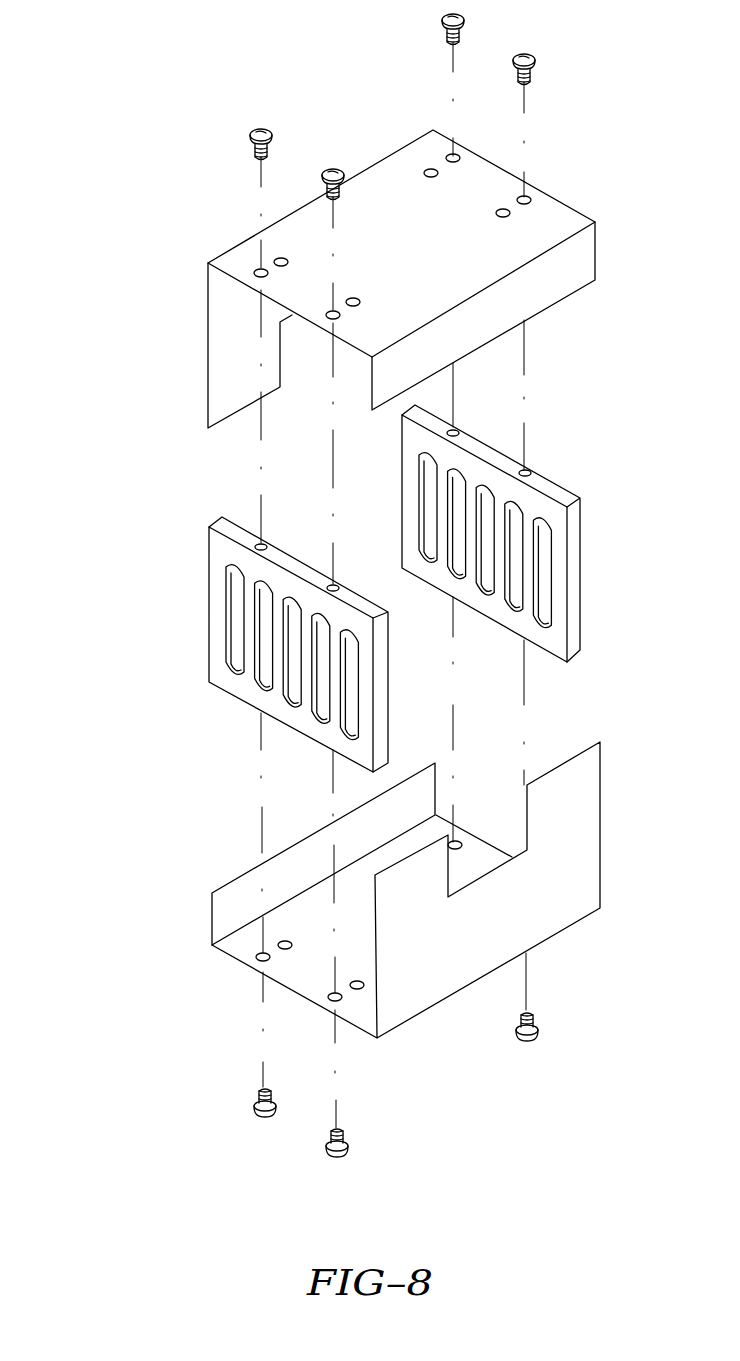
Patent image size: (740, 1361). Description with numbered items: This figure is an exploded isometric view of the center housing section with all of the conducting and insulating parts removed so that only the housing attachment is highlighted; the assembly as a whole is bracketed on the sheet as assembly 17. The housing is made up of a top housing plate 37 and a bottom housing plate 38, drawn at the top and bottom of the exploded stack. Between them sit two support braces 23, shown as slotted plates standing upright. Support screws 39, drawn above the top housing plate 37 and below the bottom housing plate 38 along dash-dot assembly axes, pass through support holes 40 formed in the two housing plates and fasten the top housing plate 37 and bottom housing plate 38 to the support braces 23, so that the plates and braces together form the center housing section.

The heat sink assembly 17 is at (130, 75).
The support braces 23 is at (560, 493).
The top housing plate 37 is at (380, 195).
The bottom housing plate 38 is at (443, 980).
The support screws 39 is at (320, 173).
The support holes 40 is at (256, 271).